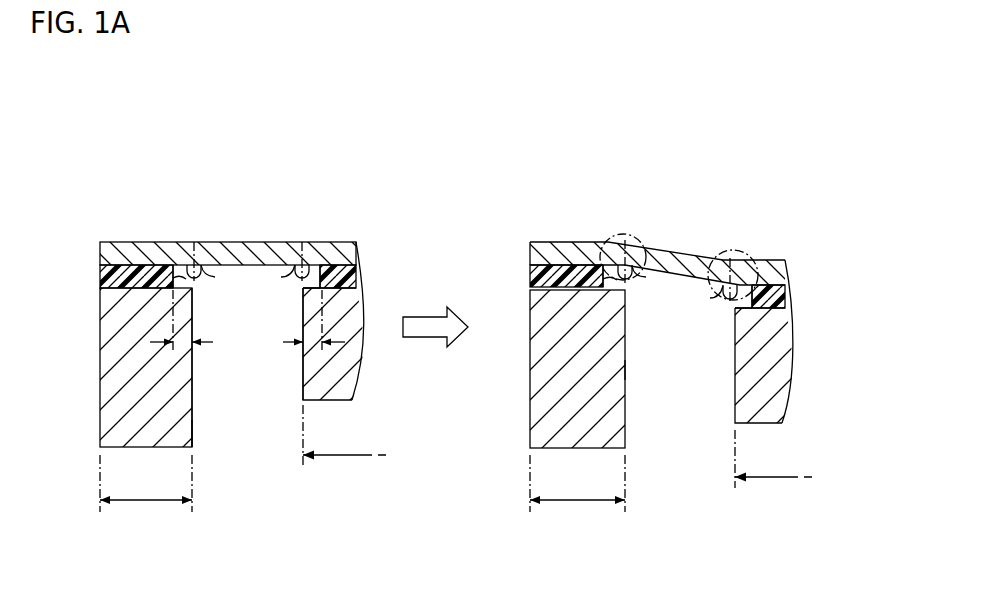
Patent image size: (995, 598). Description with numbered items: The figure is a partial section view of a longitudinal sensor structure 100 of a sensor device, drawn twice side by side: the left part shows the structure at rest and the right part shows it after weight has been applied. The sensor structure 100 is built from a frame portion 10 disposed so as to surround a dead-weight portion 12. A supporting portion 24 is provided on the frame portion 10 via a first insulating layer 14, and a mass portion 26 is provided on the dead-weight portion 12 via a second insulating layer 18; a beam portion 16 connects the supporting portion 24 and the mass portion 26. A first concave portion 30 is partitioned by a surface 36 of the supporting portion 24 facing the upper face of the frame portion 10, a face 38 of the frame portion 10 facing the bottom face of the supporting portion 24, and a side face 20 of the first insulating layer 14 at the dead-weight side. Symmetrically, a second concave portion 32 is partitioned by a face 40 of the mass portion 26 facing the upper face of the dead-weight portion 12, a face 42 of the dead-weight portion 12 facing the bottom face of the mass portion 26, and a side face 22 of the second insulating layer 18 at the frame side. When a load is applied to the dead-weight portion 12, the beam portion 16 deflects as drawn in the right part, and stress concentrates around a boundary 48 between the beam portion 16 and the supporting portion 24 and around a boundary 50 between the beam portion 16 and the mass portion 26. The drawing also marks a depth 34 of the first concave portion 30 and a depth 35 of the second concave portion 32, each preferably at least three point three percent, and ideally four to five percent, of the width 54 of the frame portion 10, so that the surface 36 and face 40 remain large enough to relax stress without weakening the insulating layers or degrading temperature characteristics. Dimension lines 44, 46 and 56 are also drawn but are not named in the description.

The sensor structure 100 is at (399, 140).
The frame portion 10 is at (100, 372).
The dead-weight portion 12 is at (356, 374).
The first insulating layer 14 is at (100, 270).
The beam portion 16 is at (240, 242).
The second insulating layer 18 is at (356, 276).
The side face of the first insulating layer 20 is at (183, 264).
The side face of the second insulating layer 22 is at (330, 266).
The supporting portion 24 is at (100, 245).
The mass portion 26 is at (321, 250).
The first concave portion 30 is at (207, 265).
The second concave portion 32 is at (284, 265).
The depth of the first concave portion 34 is at (192, 342).
The depth of the second concave portion 35 is at (303, 342).
The surface of the supporting portion 36 is at (193, 268).
The face of the frame portion 38 is at (192, 282).
The face of the mass portion 40 is at (301, 268).
The face of the dead-weight portion 42 is at (305, 287).
The side wall 44 is at (192, 428).
The offset distance 46 is at (283, 343).
The boundary between the beam portion and the supporting portion 48 is at (607, 235).
The boundary between the beam portion and the mass portion 50 is at (752, 250).
The width of the frame portion 54 is at (362, 494).
The second width 56 is at (557, 456).